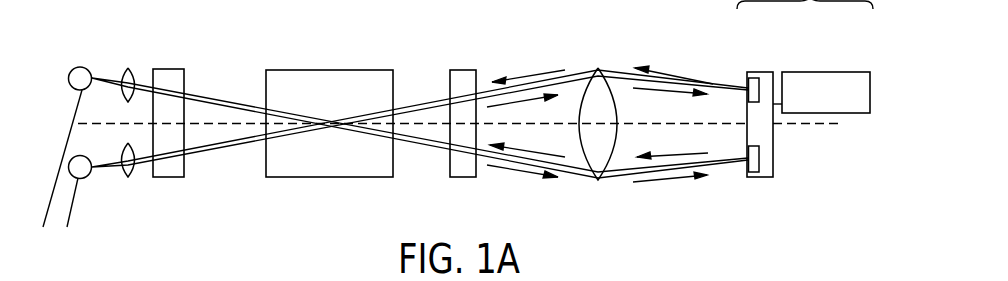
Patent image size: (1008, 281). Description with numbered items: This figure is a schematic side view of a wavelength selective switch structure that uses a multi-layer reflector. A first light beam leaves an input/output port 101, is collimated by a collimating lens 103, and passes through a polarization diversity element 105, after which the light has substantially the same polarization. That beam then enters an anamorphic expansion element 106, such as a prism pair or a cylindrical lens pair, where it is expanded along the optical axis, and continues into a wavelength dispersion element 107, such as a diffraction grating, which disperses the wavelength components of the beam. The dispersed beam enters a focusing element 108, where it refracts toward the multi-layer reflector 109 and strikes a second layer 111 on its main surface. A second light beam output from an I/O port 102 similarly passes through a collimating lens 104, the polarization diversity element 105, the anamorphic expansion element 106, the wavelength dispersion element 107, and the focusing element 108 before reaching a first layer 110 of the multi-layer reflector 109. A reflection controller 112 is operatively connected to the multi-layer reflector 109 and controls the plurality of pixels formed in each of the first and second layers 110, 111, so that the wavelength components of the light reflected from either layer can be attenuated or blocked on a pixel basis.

The input/output port 101 is at (82, 66).
The I/O port 102 is at (81, 178).
The collimating lens 103 is at (127, 71).
The collimating lens 104 is at (128, 176).
The polarization diversity element 105 is at (175, 68).
The anamorphic expansion element 106 is at (357, 69).
The wavelength dispersion element 107 is at (472, 69).
The focusing element 108 is at (598, 68).
The multi-layer reflector 109 is at (765, 75).
The first layer 110 is at (751, 79).
The second layer 111 is at (752, 167).
The reflection controller 112 is at (842, 70).